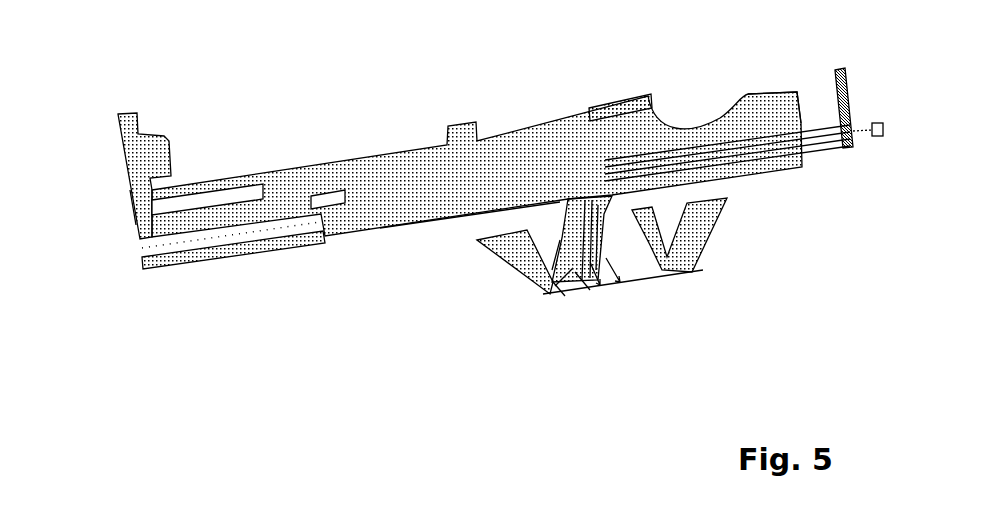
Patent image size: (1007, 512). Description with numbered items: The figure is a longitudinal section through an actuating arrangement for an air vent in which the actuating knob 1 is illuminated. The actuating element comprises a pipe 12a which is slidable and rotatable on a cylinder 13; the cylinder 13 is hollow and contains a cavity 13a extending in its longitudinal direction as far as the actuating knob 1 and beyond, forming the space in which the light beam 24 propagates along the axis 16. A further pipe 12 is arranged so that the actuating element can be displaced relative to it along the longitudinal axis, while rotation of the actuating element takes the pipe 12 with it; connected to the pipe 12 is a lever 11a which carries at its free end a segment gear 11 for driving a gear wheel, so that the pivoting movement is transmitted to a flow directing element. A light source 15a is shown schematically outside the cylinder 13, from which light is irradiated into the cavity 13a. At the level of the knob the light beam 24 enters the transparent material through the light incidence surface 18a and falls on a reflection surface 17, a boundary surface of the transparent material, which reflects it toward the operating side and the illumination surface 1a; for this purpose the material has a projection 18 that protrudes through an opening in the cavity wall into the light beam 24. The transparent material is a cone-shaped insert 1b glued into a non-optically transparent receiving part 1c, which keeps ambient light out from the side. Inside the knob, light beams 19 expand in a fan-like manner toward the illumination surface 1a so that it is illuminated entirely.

The actuating knob 1 is at (593, 285).
The illumination surface 1a is at (612, 275).
The cone-shaped insert 1b is at (580, 292).
The receiving part 1c is at (512, 262).
The segment gear 11 is at (118, 121).
The lever 11a is at (134, 198).
The pipe 12 is at (247, 250).
The pipe 12a is at (475, 218).
The cylinder 13 is at (768, 165).
The cavity 13a is at (800, 150).
The light source 15a is at (884, 129).
The axis 16 is at (130, 248).
The reflection surface 17 is at (600, 190).
The projection 18 is at (583, 182).
The light incidence surface 18a is at (620, 163).
The light beams 19 is at (640, 268).
The light beam 24 is at (825, 120).